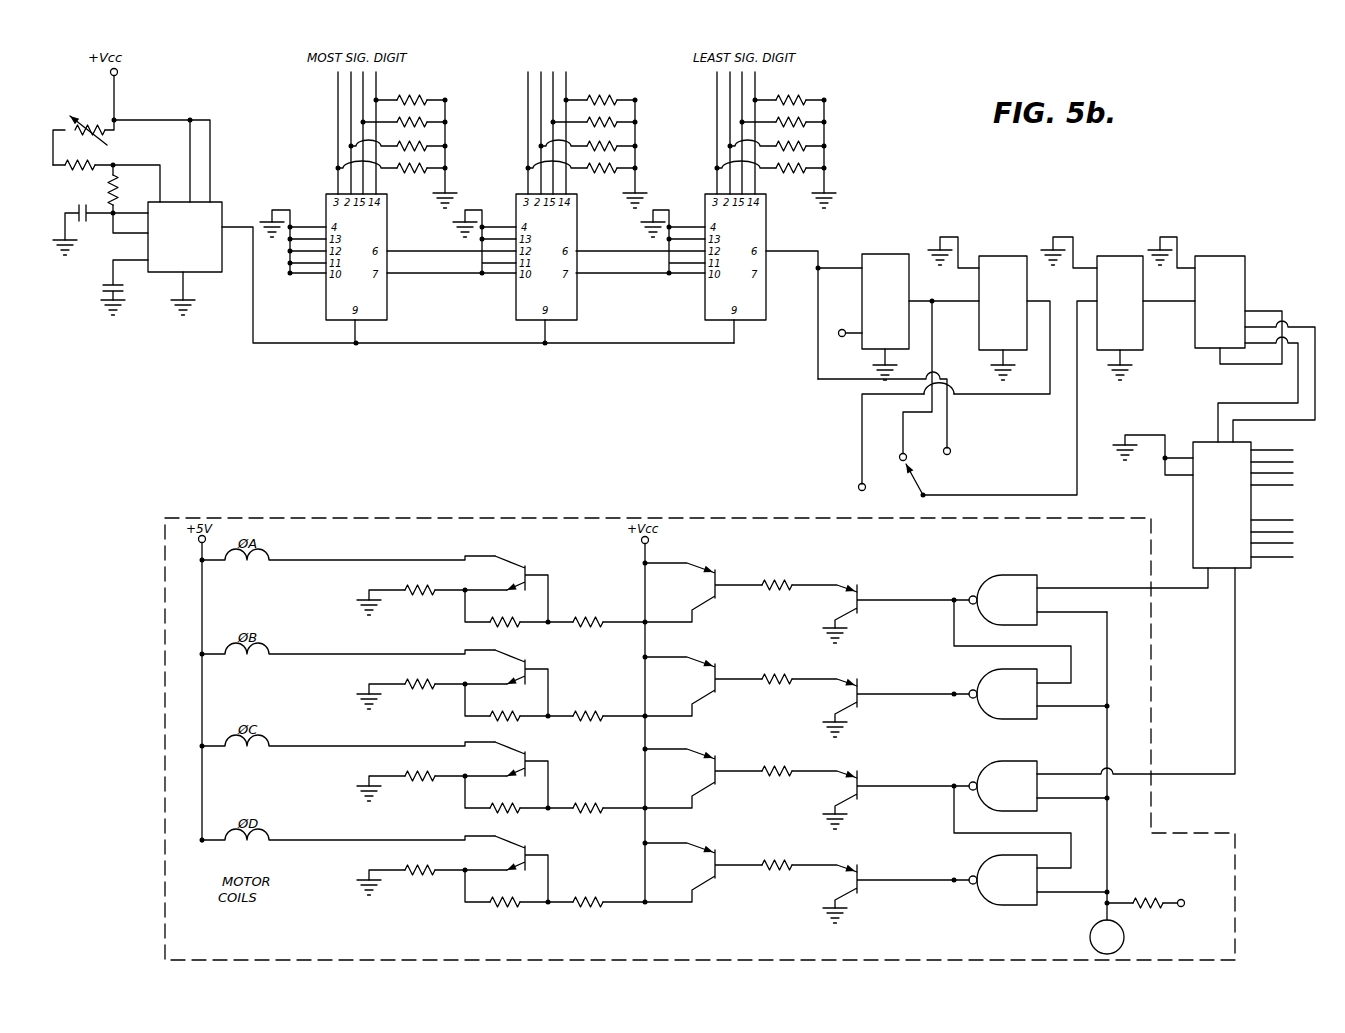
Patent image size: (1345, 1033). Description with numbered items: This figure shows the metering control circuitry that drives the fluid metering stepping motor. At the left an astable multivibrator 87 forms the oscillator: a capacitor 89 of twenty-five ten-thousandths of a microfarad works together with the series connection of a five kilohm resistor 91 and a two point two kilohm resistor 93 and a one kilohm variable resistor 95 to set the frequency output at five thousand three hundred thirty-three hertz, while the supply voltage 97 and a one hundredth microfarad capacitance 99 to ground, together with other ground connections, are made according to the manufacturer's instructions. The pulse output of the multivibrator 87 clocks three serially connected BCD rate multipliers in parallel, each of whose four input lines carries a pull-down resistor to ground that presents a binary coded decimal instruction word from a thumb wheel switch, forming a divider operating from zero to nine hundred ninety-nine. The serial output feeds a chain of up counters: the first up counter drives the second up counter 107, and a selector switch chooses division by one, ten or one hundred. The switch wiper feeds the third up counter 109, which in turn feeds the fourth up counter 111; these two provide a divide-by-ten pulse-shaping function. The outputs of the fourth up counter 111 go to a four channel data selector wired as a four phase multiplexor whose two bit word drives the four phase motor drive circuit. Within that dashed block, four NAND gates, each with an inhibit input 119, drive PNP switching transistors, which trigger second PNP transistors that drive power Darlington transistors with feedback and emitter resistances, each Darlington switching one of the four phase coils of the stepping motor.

The multivibrator 87 is at (197, 248).
The capacitor 89 is at (92, 208).
The resistor 91 is at (78, 168).
The resistor 93 is at (118, 192).
The variable resistor 95 is at (104, 122).
The supply voltage 97 is at (121, 70).
The capacitance 99 is at (100, 289).
The second up counter 107 is at (1016, 332).
The third up counter 109 is at (1131, 336).
The fourth up counter 111 is at (1233, 291).
The inhibit input 119 is at (1123, 938).